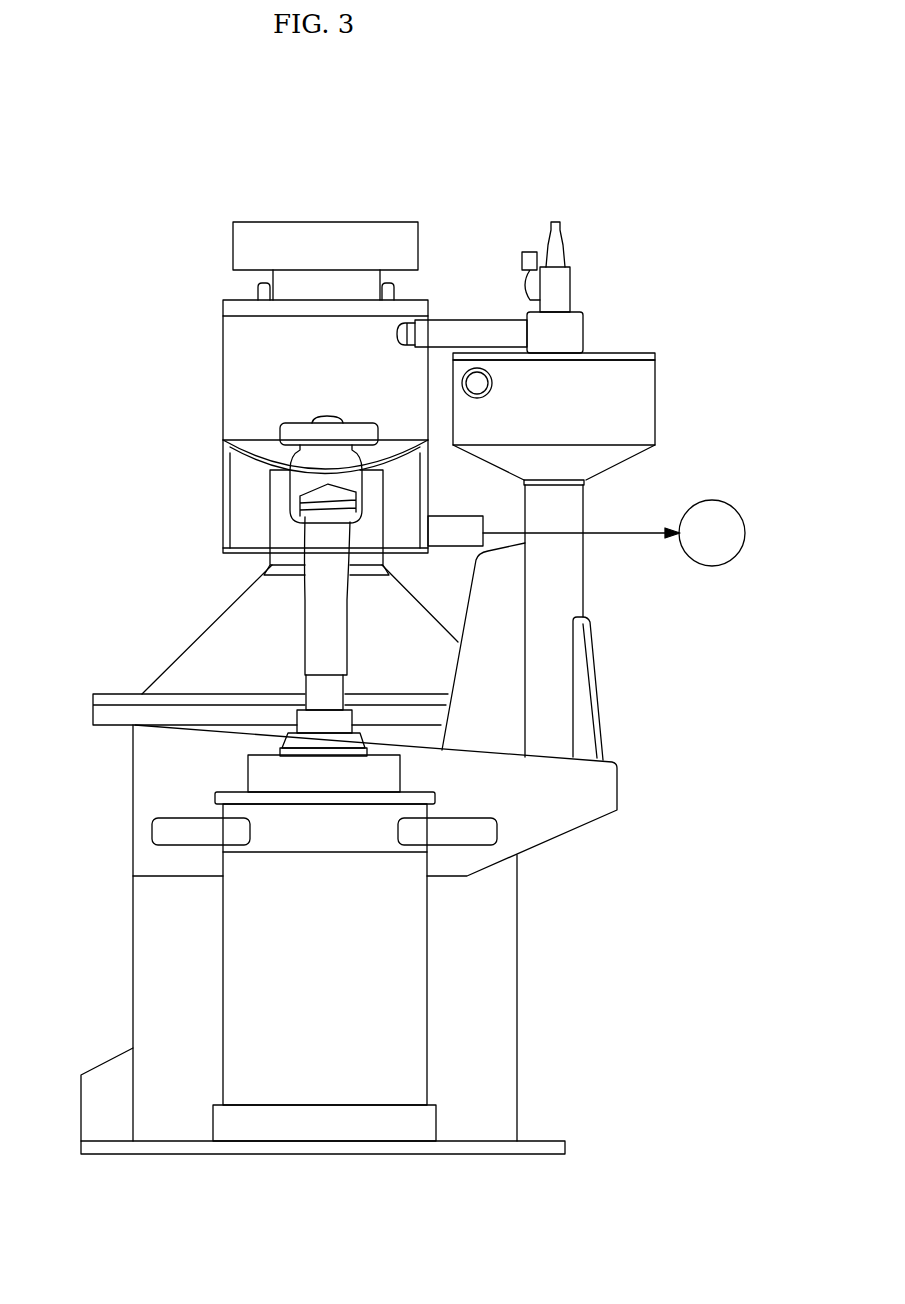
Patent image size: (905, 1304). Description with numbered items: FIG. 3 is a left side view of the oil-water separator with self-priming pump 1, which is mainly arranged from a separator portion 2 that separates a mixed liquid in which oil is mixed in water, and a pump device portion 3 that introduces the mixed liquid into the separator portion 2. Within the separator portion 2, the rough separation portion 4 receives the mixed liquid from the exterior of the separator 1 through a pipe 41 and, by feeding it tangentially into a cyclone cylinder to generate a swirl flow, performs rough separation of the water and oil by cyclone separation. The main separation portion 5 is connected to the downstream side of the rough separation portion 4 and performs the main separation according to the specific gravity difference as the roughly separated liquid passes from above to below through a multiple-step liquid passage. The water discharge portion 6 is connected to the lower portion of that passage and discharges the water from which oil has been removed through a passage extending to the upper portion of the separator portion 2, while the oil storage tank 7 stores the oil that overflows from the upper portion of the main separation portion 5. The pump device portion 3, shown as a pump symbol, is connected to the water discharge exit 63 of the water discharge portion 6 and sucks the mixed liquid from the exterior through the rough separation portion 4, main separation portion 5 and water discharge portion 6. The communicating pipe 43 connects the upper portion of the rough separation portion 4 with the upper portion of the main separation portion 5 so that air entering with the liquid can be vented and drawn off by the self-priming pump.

The oil-water separator with self-priming pump 1 is at (732, 186).
The separator portion 2 is at (174, 248).
The pump device portion 3 is at (718, 501).
The rough separation portion 4 is at (640, 395).
The pipe 41 is at (478, 368).
The communicating pipe 43 is at (451, 318).
The main separation portion 5 is at (207, 636).
The water discharge portion 6 is at (234, 383).
The water discharge exit 63 is at (487, 519).
The oil storage tank 7 is at (250, 961).